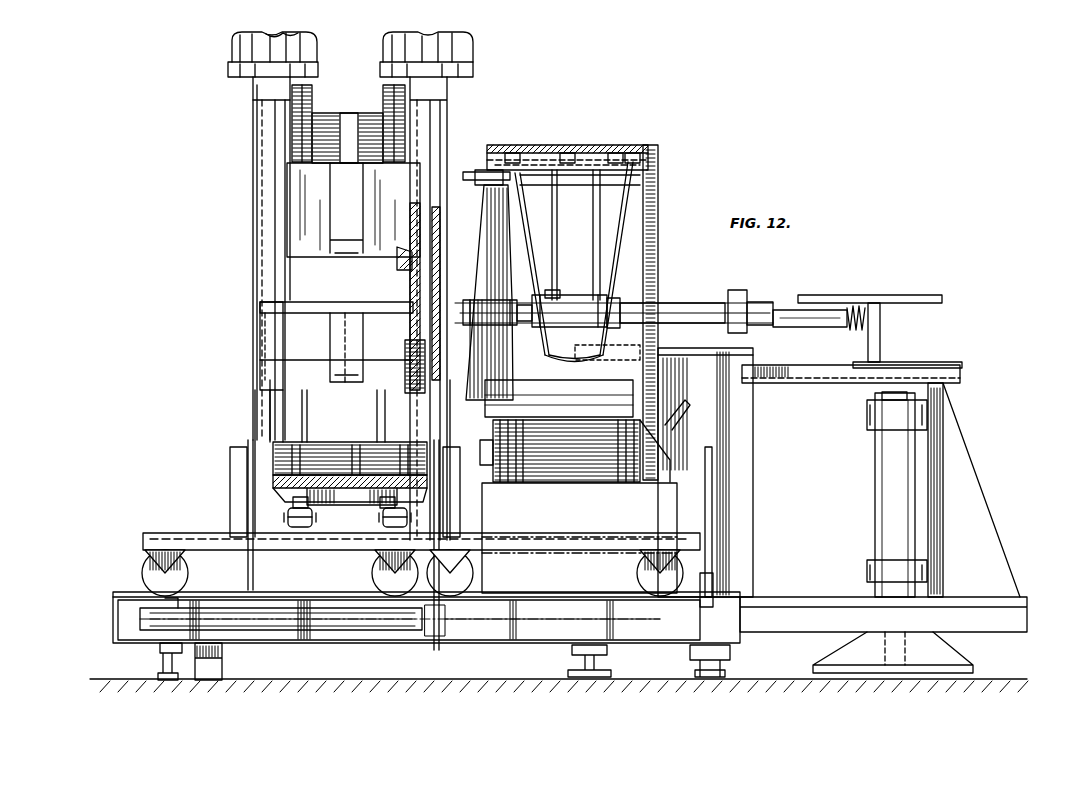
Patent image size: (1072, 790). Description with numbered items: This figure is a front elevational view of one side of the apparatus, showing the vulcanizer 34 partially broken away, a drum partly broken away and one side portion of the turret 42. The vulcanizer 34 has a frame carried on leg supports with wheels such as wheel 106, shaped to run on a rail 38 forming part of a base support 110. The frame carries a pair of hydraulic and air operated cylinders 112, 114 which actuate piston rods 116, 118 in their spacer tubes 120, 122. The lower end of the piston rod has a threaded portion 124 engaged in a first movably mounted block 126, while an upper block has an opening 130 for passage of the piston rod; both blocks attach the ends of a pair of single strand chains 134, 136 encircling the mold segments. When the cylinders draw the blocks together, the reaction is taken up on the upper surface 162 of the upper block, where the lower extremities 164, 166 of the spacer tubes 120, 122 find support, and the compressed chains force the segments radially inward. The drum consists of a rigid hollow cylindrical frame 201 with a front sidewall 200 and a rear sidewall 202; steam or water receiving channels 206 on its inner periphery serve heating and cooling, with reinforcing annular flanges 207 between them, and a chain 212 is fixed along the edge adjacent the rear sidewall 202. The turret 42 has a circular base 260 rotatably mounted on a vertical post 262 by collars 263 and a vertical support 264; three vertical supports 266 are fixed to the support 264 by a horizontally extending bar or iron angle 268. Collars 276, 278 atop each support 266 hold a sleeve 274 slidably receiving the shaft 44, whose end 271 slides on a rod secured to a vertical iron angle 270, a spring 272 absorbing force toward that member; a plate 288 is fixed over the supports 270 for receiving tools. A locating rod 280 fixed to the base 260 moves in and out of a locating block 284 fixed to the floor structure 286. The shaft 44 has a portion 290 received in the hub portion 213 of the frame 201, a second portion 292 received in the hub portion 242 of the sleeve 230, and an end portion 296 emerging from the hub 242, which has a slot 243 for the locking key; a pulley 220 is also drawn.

The vulcanizer 34 is at (233, 97).
The rail 38 is at (140, 560).
The turret 42 is at (998, 352).
The shaft 44 is at (785, 305).
The wheel 106 is at (470, 590).
The base support 110 is at (117, 609).
The hydraulic and air operated cylinder 112 is at (473, 48).
The hydraulic and air operated cylinder 114 is at (232, 48).
The piston rod 116 is at (410, 213).
The piston rod 118 is at (262, 305).
The spacer tube 120 is at (428, 157).
The spacer tube 122 is at (265, 178).
The threaded portion 124 is at (410, 378).
The first movably mounted block 126 is at (400, 357).
The opening 130 is at (398, 250).
The single strand chain 134 is at (392, 137).
The single strand chain 136 is at (296, 125).
The upper surface 162 is at (258, 250).
The lower extremity 164 is at (410, 245).
The lower extremity 166 is at (280, 250).
The front sidewall 200 is at (500, 218).
The rigid hollow cylindrical frame 201 is at (640, 155).
The rear sidewall 202 is at (610, 200).
The steam or water receiving channel 206 is at (565, 122).
The reinforcing annular flange 207 is at (600, 245).
The chain 212 is at (658, 150).
The hub portion 213 is at (610, 355).
The pulley 220 is at (555, 335).
The sleeve 230 is at (607, 150).
The hub portion 242 is at (480, 265).
The slot 243 is at (450, 325).
The circular base 260 is at (1028, 622).
The vertical post 262 is at (895, 392).
The collar 263 is at (870, 405).
The vertical support 264 is at (985, 505).
The vertical support 266 is at (745, 478).
The horizontally extending bar or iron angle 268 is at (830, 375).
The vertical iron angle 270 is at (880, 355).
The end of shaft 271 is at (833, 310).
The spring 272 is at (853, 328).
The sleeve 274 is at (762, 302).
The collar 276 is at (740, 290).
The collar 278 is at (600, 300).
The inverted L-shaped locating rod 280 is at (710, 520).
The locating block 284 is at (722, 652).
The floor structure 286 is at (835, 675).
The plate 288 is at (918, 295).
The portion of shaft 290 is at (560, 295).
The second portion of shaft 292 is at (515, 325).
The end portion of shaft 296 is at (455, 308).